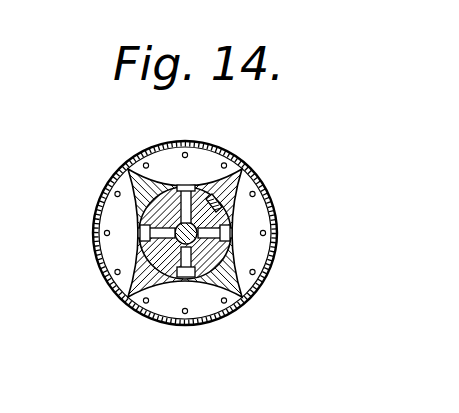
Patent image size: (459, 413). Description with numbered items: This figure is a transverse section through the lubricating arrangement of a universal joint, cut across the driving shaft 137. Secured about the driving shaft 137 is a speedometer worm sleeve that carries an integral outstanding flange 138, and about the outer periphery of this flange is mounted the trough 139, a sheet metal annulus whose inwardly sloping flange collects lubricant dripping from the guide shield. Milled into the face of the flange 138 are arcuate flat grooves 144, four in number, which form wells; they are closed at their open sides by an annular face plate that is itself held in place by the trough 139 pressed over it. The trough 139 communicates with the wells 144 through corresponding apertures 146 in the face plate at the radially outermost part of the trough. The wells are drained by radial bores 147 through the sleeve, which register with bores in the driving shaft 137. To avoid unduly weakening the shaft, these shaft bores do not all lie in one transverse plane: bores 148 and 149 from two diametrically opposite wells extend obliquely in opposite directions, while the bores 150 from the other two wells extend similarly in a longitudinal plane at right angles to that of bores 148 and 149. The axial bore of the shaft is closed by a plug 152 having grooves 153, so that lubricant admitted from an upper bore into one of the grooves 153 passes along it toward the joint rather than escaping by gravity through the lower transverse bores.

The driving shaft 137 is at (127, 288).
The outstanding flange 138 is at (112, 247).
The trough 139 is at (244, 172).
The arcuate flat grooves 144 is at (143, 153).
The apertures 146 is at (97, 227).
The radial bores 147 is at (180, 187).
The bore 148 is at (205, 187).
The bore 149 is at (167, 293).
The bores 150 is at (108, 280).
The plug 152 is at (232, 252).
The grooves 153 is at (250, 207).